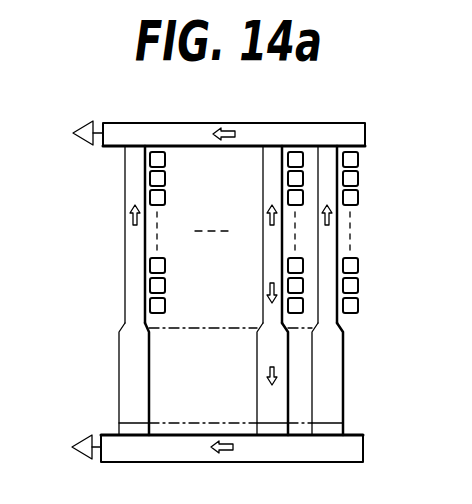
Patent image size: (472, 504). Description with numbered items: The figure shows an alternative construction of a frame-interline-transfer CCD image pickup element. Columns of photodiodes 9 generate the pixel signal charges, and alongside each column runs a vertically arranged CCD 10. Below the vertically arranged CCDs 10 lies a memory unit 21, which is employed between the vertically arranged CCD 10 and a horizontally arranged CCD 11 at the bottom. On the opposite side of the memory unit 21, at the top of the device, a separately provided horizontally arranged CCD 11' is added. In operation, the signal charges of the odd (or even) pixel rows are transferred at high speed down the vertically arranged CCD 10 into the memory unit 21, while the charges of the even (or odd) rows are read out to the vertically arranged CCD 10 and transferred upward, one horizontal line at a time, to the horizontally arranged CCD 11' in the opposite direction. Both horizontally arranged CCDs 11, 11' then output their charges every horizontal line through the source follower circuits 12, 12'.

The photodiode 9 is at (359, 158).
The vertically arranged CCD 10 is at (127, 246).
The horizontally arranged CCD 11 is at (259, 444).
The horizontally arranged CCD 11' is at (234, 112).
The source follower circuit 12 is at (61, 441).
The source follower circuit 12' is at (87, 113).
The memory unit 21 is at (120, 365).